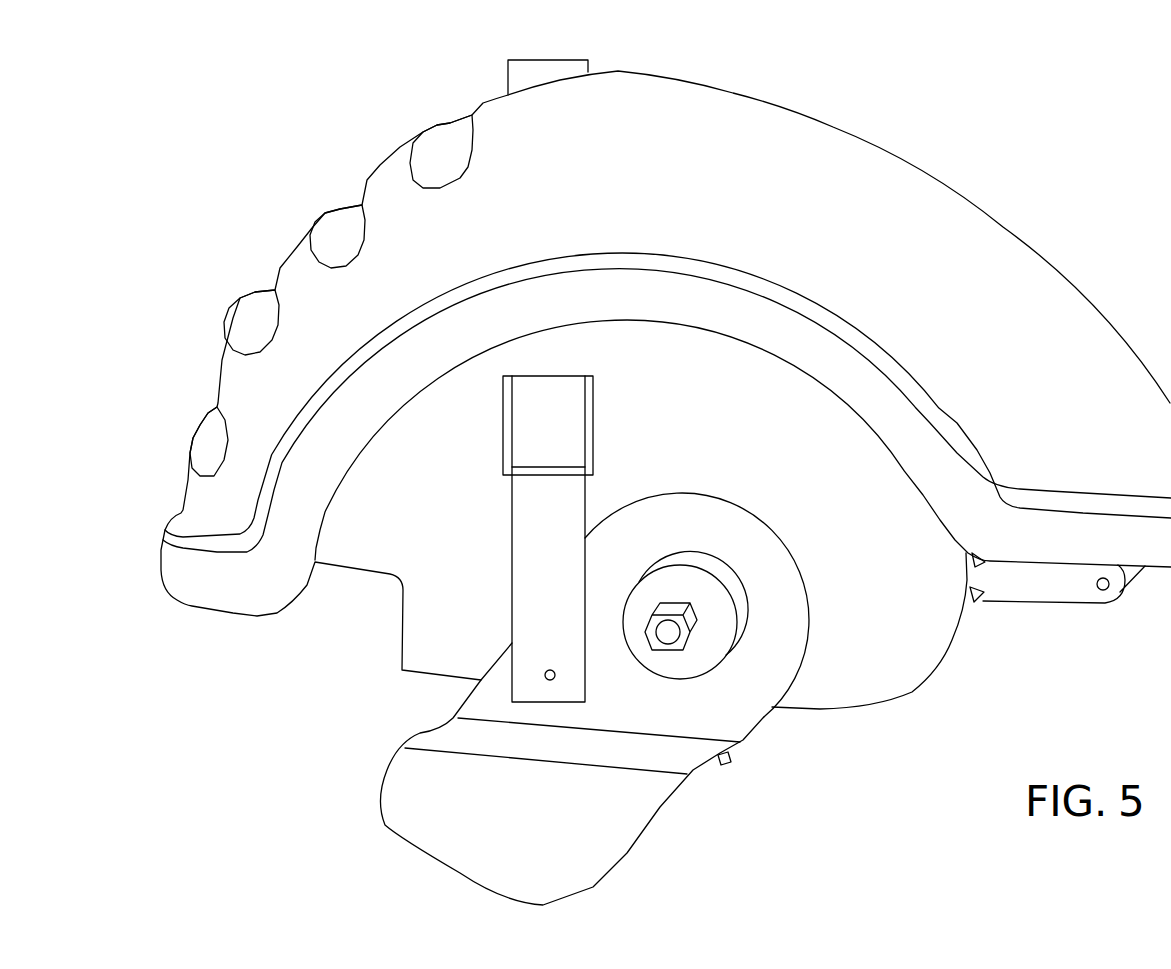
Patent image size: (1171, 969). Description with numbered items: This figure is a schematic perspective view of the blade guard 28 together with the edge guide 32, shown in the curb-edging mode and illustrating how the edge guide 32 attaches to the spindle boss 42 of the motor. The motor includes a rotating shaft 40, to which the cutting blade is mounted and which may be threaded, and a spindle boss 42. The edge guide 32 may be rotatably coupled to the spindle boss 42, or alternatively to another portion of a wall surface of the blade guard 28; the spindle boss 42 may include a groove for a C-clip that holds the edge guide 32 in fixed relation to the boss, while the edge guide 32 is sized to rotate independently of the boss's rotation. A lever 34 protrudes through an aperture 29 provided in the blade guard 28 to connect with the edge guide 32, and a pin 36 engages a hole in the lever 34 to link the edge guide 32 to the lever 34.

The blade guard 28 is at (1003, 227).
The aperture 29 is at (503, 448).
The edge guide 32 is at (378, 809).
The lever 34 is at (508, 73).
The pin 36 is at (545, 676).
The rotating shaft 40 is at (668, 634).
The spindle boss 42 is at (738, 612).